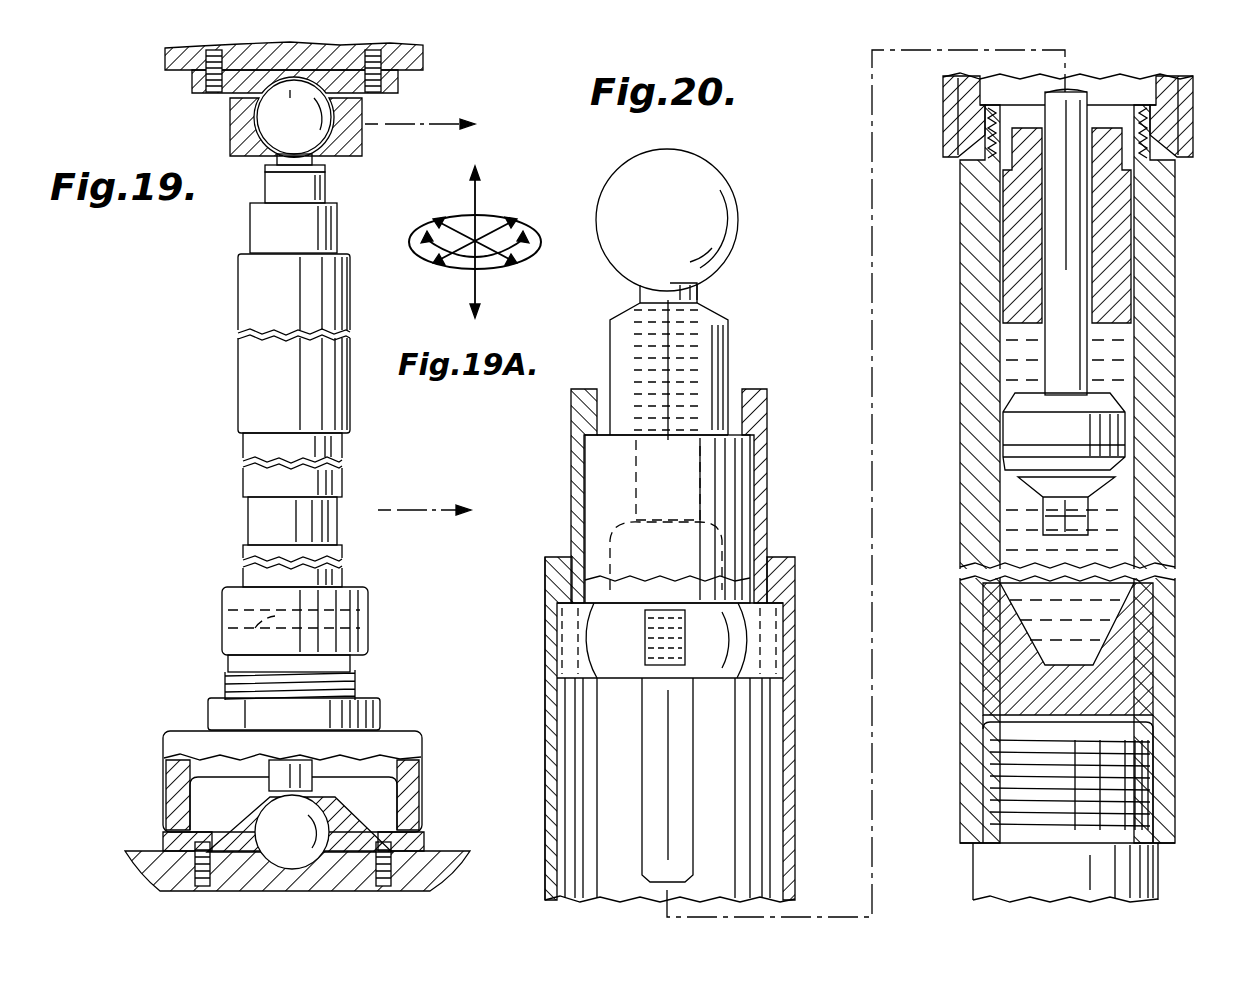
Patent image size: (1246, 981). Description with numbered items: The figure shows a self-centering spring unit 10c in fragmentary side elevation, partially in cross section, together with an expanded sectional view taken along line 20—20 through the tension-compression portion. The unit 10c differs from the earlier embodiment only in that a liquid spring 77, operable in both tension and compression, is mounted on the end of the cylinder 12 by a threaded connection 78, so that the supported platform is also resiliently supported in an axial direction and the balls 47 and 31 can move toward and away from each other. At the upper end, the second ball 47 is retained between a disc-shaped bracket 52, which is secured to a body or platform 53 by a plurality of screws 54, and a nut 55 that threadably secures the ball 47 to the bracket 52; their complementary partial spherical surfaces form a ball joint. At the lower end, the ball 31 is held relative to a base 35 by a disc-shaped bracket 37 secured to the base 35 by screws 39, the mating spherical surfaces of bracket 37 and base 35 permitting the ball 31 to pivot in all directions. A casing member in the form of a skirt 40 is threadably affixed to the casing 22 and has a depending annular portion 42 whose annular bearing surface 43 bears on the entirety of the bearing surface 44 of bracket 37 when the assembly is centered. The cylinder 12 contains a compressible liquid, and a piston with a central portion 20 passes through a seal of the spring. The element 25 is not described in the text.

In FIG. 19, the platform 53 is at (175, 62).
In FIG. 19, the bracket 52 is at (195, 84).
In FIG. 19, the screws 54 is at (210, 98).
In FIG. 19, the second ball 47 is at (262, 124).
In FIG. 20, the second ball 47 is at (640, 175).
In FIG. 19, the nut 55 is at (335, 150).
In FIG. 19, the central portion of piston 20 is at (420, 300).
In FIG. 19, the self-centering spring unit 10c is at (207, 621).
In FIG. 20, the self-centering spring unit 10c is at (936, 212).
In FIG. 19, the liquid spring 77 is at (332, 407).
In FIG. 20, the liquid spring 77 is at (1176, 550).
In FIG. 19, the cylinder 12 is at (248, 522).
In FIG. 20, the cylinder 12 is at (1160, 866).
In FIG. 19, the casing 22 is at (344, 556).
In FIG. 19, the cap 25 is at (235, 636).
In FIG. 19, the skirt 40 is at (420, 738).
In FIG. 19, the annular bearing surface 43 is at (175, 820).
In FIG. 19, the ball 31 is at (275, 820).
In FIG. 19, the depending annular portion 42 is at (422, 798).
In FIG. 19, the bracket 37 is at (165, 838).
In FIG. 19, the bearing surface 44 is at (405, 832).
In FIG. 19, the base 35 is at (160, 866).
In FIG. 19, the screws 39 is at (200, 880).
In FIG. 20, the threaded connection 78 is at (1140, 775).